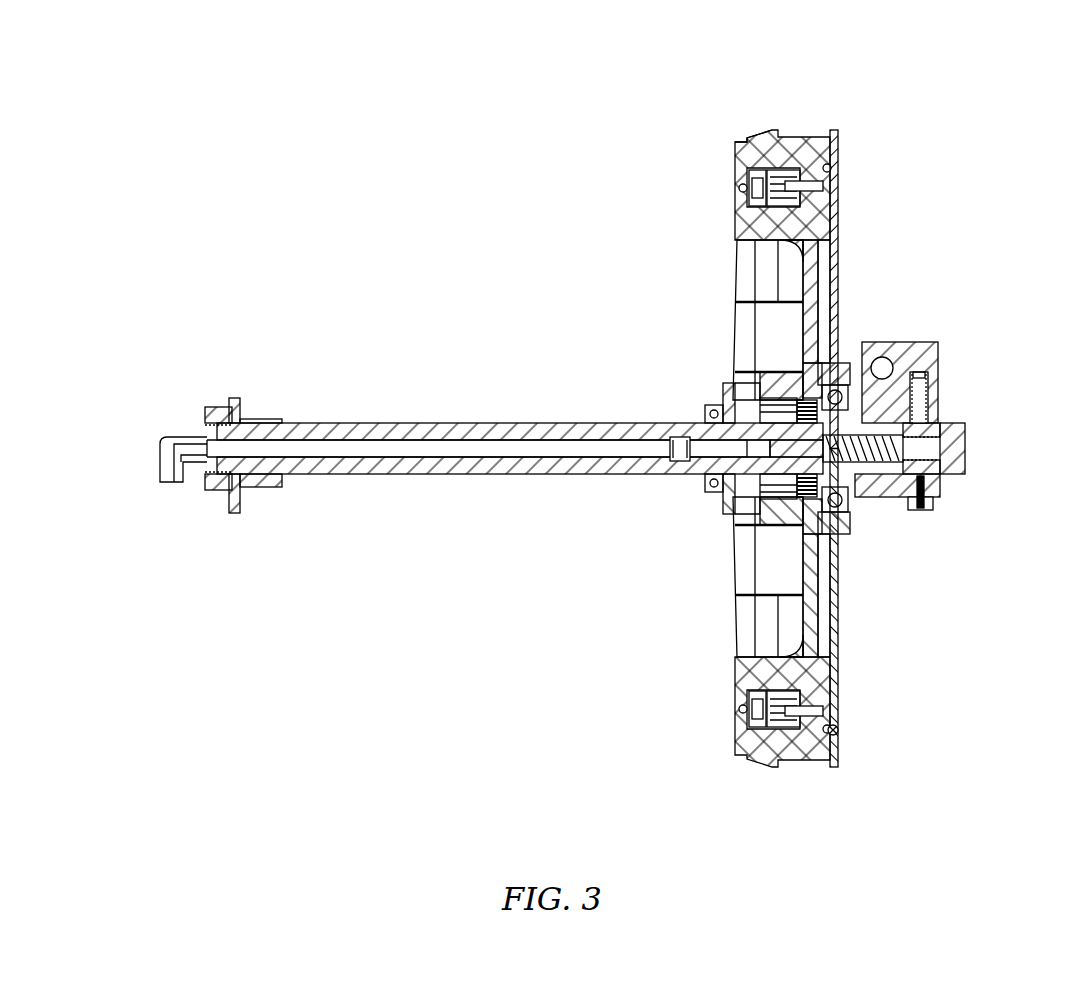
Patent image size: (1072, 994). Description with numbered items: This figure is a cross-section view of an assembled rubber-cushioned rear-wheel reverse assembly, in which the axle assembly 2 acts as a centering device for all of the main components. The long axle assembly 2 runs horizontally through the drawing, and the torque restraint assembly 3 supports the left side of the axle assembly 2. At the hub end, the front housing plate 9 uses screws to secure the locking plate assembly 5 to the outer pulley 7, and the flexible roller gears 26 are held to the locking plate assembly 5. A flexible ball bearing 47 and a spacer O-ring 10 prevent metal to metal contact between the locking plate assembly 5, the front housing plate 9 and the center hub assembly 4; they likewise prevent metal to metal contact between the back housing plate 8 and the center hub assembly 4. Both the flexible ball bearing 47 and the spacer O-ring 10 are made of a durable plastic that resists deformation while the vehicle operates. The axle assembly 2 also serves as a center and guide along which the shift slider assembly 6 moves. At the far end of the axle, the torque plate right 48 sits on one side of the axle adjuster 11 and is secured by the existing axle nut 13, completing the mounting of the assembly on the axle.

The axle assembly 2 is at (380, 420).
The torque restraint assembly 3 is at (940, 345).
The center hub assembly 4 is at (735, 300).
The locking plate assembly 5 is at (840, 245).
The shift slider assembly 6 is at (763, 400).
The outer pulley 7 is at (798, 136).
The back housing plate 8 is at (735, 160).
The front housing plate 9 is at (840, 147).
The spacer O-ring 10 is at (740, 712).
The axle adjuster 11 is at (235, 520).
The axle nut 13 is at (205, 407).
The flexible roller gears 26 is at (737, 147).
The flexible ball bearing 47 is at (835, 730).
The torque plate right 48 is at (270, 488).